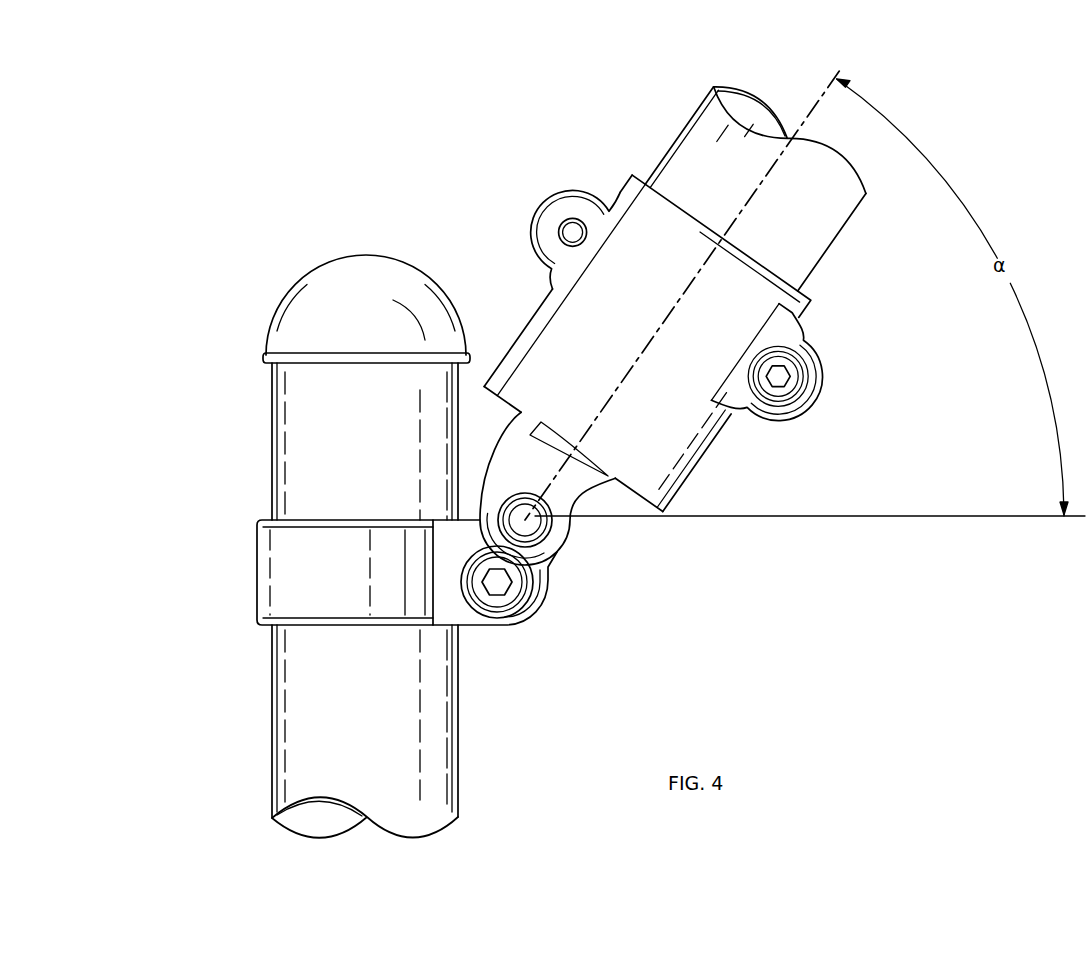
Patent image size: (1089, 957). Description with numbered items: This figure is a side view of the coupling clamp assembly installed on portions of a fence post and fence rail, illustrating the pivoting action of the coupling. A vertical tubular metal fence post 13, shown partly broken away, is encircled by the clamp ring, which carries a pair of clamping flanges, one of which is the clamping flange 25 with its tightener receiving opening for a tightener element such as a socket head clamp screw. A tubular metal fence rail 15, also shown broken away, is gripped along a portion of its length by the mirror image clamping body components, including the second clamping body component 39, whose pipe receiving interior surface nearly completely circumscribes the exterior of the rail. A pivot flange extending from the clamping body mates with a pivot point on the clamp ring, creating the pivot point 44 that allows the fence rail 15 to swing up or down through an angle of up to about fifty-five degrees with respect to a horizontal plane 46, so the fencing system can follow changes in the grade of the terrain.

The vertical tubular metal fence post 13 is at (271, 695).
The tubular metal fence rail 15 is at (670, 130).
The clamping flange 25 is at (458, 606).
The second clamping body component 39 is at (752, 243).
The pivot point 44 is at (537, 530).
The horizontal plane 46 is at (830, 517).